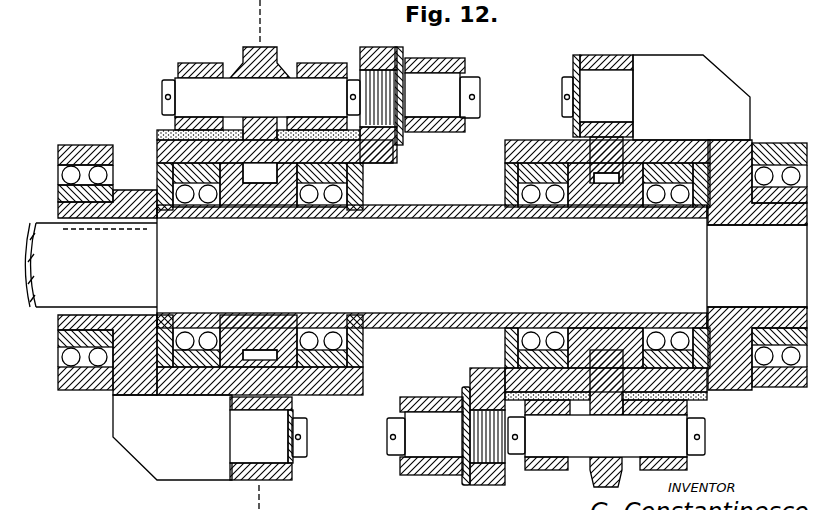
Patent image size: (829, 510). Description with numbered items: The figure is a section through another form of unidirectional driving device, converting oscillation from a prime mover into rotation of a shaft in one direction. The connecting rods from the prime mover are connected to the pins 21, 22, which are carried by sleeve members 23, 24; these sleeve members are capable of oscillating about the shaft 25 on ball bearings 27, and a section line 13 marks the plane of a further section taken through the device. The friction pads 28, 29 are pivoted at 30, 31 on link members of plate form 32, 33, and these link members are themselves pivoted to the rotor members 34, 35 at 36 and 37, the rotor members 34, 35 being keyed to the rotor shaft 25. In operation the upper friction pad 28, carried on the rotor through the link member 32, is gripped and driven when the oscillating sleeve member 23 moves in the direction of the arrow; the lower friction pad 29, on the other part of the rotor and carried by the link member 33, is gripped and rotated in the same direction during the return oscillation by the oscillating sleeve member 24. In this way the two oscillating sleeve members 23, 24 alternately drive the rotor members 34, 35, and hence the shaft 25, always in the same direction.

The section line 13 is at (252, 31).
The pin 21 is at (430, 95).
The pin 22 is at (425, 437).
The sleeve member 23 is at (373, 152).
The sleeve member 24 is at (498, 380).
The shaft 25 is at (417, 266).
The ball bearings 27 is at (210, 200).
The friction pad 28 is at (158, 136).
The friction pad 29 is at (693, 408).
The pivot 30 is at (320, 97).
The pivot 31 is at (606, 435).
The link member of plate form 32 is at (262, 60).
The link member of plate form 33 is at (615, 467).
The rotor member 34 is at (143, 418).
The rotor member 35 is at (717, 116).
The pivot 36 is at (255, 435).
The pivot 37 is at (600, 90).